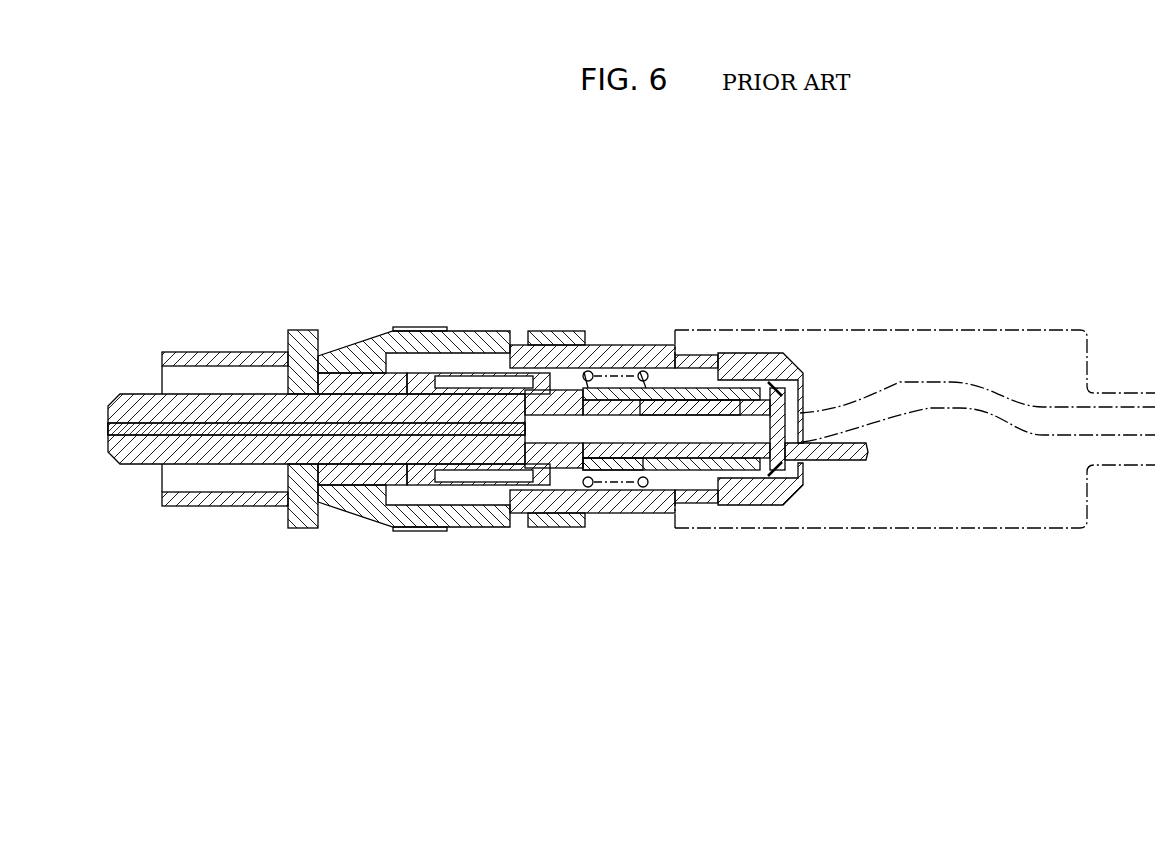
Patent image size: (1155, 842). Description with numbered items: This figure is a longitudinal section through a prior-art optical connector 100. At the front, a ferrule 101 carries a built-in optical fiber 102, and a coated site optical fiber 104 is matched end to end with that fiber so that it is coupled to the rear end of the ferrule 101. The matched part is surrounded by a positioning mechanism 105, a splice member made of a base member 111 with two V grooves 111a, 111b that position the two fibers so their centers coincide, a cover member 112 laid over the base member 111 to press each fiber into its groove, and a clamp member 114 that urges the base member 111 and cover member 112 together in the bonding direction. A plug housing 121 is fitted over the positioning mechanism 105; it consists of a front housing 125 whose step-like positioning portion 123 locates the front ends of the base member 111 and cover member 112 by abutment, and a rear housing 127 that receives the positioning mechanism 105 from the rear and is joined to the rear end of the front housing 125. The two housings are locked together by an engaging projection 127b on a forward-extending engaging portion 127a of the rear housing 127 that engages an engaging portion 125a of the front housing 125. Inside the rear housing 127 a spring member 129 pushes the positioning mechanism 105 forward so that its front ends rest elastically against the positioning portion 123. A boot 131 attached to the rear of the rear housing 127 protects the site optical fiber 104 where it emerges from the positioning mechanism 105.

The optical connector 100 is at (622, 332).
The ferrule 101 is at (137, 467).
The built-in optical fiber 102 is at (263, 465).
The site optical fiber 104 is at (878, 388).
The positioning mechanism 105 is at (486, 352).
The base member 111 is at (585, 505).
The V groove 111a is at (473, 420).
The V groove 111b is at (686, 400).
The cover member 112 is at (522, 355).
The clamp member 114 is at (484, 362).
The plug housing 121 is at (414, 545).
The positioning portion 123 is at (345, 507).
The front housing 125 is at (465, 512).
The engaging portion 125a is at (525, 512).
The rear housing 127 is at (627, 513).
The engaging portion 127a is at (497, 512).
The engaging projection 127b is at (521, 512).
The spring member 129 is at (652, 513).
The boot 131 is at (877, 532).